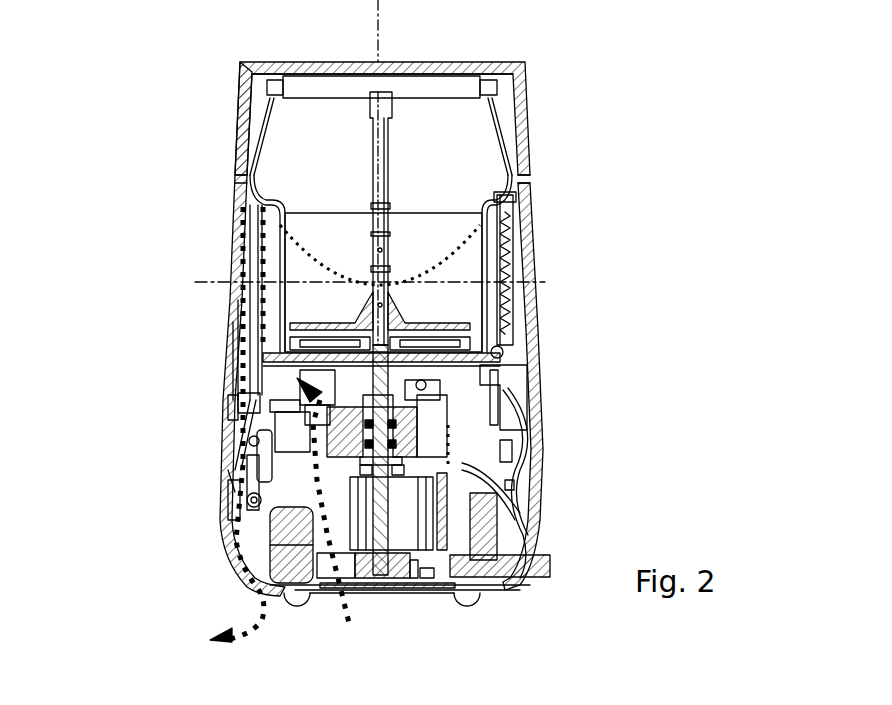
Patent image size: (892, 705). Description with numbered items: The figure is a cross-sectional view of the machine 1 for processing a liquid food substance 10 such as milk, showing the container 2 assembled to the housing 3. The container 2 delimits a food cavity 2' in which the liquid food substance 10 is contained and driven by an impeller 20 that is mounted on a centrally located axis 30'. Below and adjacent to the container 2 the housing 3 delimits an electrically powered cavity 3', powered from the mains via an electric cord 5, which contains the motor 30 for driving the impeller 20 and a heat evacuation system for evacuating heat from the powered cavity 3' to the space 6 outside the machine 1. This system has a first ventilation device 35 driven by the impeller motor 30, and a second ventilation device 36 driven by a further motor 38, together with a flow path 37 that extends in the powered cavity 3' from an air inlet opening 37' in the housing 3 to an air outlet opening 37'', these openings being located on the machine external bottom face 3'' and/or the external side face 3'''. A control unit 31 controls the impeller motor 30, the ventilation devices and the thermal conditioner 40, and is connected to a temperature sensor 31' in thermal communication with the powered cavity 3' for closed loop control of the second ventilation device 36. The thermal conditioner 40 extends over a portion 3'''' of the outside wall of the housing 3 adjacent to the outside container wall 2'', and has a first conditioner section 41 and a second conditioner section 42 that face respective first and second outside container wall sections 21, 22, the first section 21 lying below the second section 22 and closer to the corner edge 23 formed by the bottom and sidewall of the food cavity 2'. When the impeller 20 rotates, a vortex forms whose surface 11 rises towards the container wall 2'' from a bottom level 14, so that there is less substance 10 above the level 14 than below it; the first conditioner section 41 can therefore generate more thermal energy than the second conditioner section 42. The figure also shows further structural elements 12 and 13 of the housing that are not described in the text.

The machine 1 is at (176, 146).
The container 2 is at (427, 118).
The food cavity 2' is at (381, 90).
The outside container wall 2'' is at (374, 282).
The housing 3 is at (549, 386).
The electrically powered cavity 3' is at (539, 483).
The machine external bottom face 3'' is at (412, 625).
The machine external side face 3''' is at (171, 353).
The outside housing wall portion 3'''' is at (169, 338).
The electric cord 5 is at (537, 578).
The space outside machine 6 is at (187, 644).
The liquid food substance 10 is at (312, 264).
The surface of substance 11 is at (287, 273).
The inner wall 12 is at (277, 268).
The intermediate wall 13 is at (287, 315).
The level 14 is at (213, 282).
The impeller 20 is at (390, 313).
The first outside container wall section 21 is at (478, 318).
The second outside container wall section 22 is at (478, 257).
The corner edge 23 is at (270, 349).
The motor 30 is at (461, 422).
The centrally located axis 30' is at (335, 31).
The control unit 31 is at (487, 460).
The temperature sensor 31' is at (534, 487).
The first ventilation device 35 is at (487, 385).
The second ventilation device 36 is at (427, 563).
The flow path 37 is at (221, 466).
The air inlet opening 37' is at (346, 515).
The air outlet opening 37'' is at (274, 562).
The further motor 38 is at (400, 562).
The thermal conditioner 40 is at (510, 239).
The first conditioner section 41 is at (512, 300).
The second conditioner section 42 is at (500, 267).